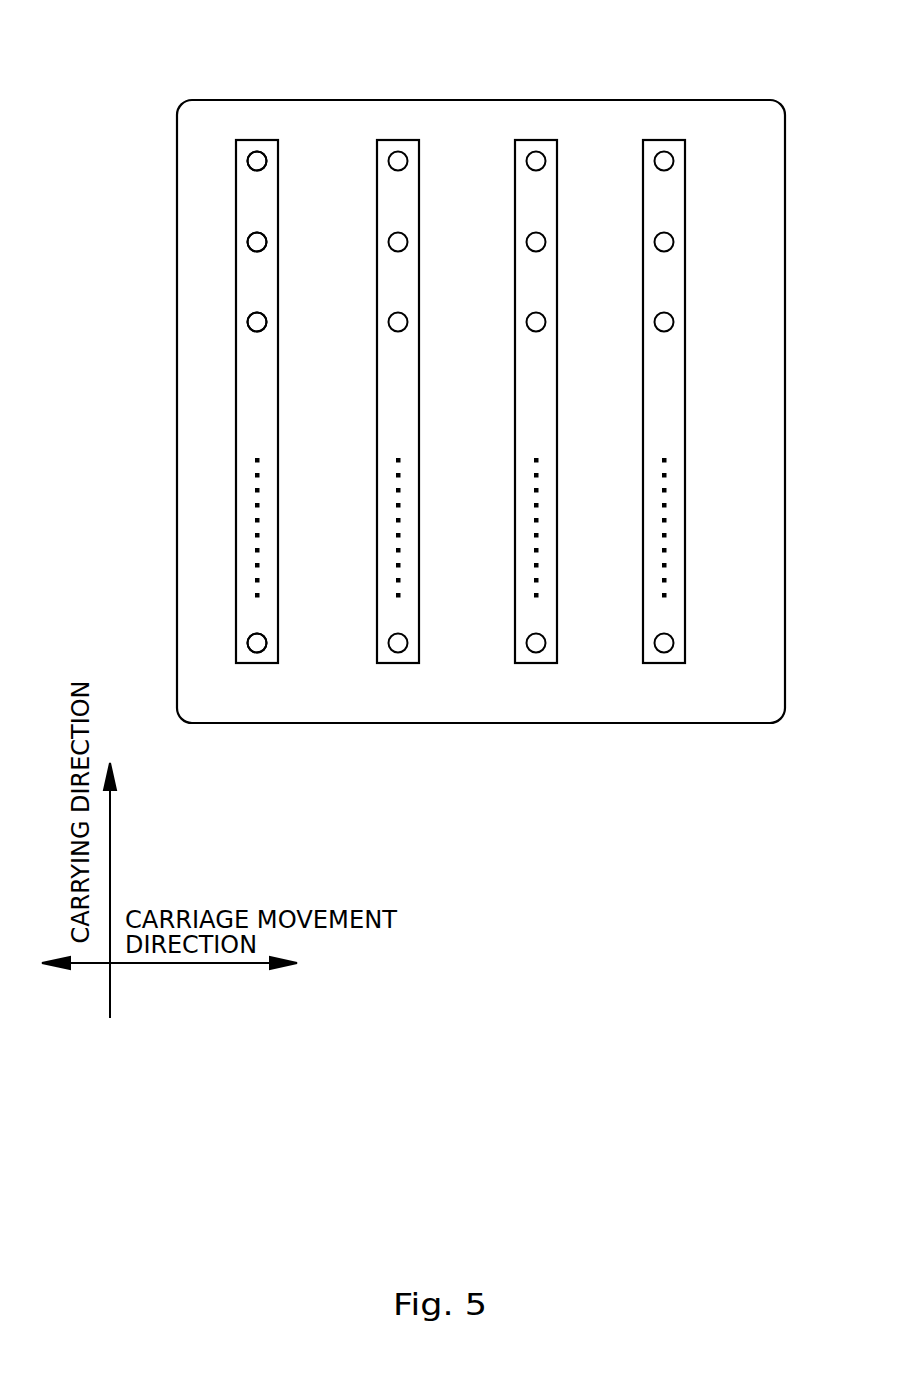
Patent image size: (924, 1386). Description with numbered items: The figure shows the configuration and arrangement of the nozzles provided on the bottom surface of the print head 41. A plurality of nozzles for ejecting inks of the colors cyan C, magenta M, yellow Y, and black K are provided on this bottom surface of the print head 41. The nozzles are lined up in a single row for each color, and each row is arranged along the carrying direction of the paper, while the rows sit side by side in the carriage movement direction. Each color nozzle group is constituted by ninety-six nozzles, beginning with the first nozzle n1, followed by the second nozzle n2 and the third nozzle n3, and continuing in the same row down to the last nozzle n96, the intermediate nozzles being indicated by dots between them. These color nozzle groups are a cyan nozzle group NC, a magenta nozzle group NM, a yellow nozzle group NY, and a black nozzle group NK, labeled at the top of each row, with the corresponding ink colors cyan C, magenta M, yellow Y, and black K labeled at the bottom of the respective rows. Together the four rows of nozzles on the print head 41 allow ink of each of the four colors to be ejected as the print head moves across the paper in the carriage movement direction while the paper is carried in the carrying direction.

The print head 41 is at (176, 430).
The cyan nozzle group NC is at (257, 140).
The magenta nozzle group NM is at (398, 140).
The yellow nozzle group NY is at (536, 140).
The black nozzle group NK is at (664, 140).
The cyan C is at (257, 663).
The magenta M is at (398, 663).
The yellow Y is at (536, 663).
The black K is at (664, 663).
The nozzle n1 is at (248, 161).
The nozzle n2 is at (248, 242).
The nozzle n3 is at (248, 322).
The nozzle n96 is at (248, 643).